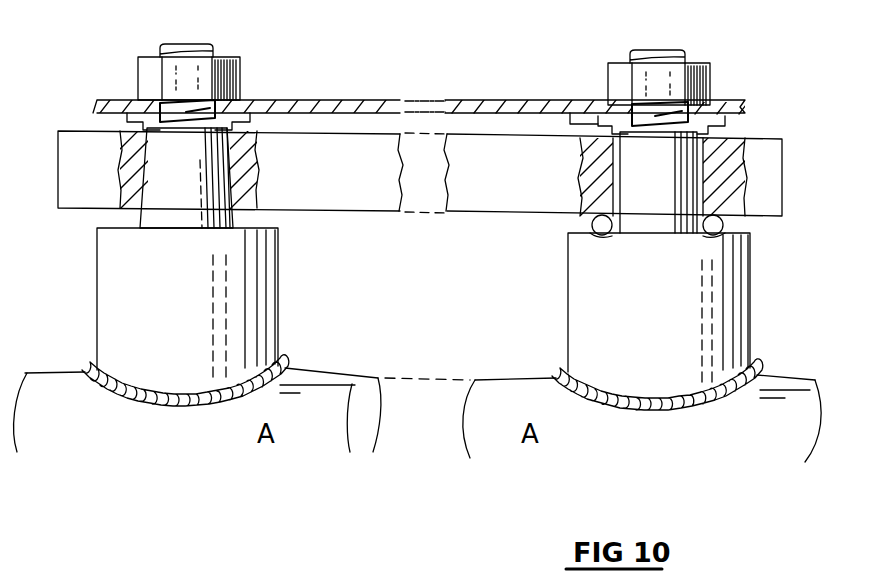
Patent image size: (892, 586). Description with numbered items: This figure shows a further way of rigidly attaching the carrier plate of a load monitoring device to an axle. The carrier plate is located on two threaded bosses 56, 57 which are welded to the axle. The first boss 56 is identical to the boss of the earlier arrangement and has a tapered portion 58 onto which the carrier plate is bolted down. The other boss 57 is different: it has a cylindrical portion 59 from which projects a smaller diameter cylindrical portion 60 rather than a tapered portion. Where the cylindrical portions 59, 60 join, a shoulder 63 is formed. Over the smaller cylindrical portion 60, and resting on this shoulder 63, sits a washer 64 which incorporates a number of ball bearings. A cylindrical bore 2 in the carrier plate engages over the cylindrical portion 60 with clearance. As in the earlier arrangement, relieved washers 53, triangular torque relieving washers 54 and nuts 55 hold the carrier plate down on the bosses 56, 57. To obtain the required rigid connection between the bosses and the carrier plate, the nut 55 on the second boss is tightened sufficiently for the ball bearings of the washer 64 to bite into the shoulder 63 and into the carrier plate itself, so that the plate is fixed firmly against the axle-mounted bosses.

The cylindrical bore 2 is at (780, 155).
The relieved washer 53 is at (574, 113).
The triangular torque relieving washer 54 is at (460, 104).
The nut 55 is at (618, 80).
The threaded boss 56 is at (154, 225).
The threaded boss 57 is at (644, 228).
The tapered portion 58 is at (158, 180).
The cylindrical portion 59 is at (585, 298).
The smaller diameter cylindrical portion 60 is at (415, 172).
The shoulder 63 is at (575, 228).
The washer 64 is at (724, 228).